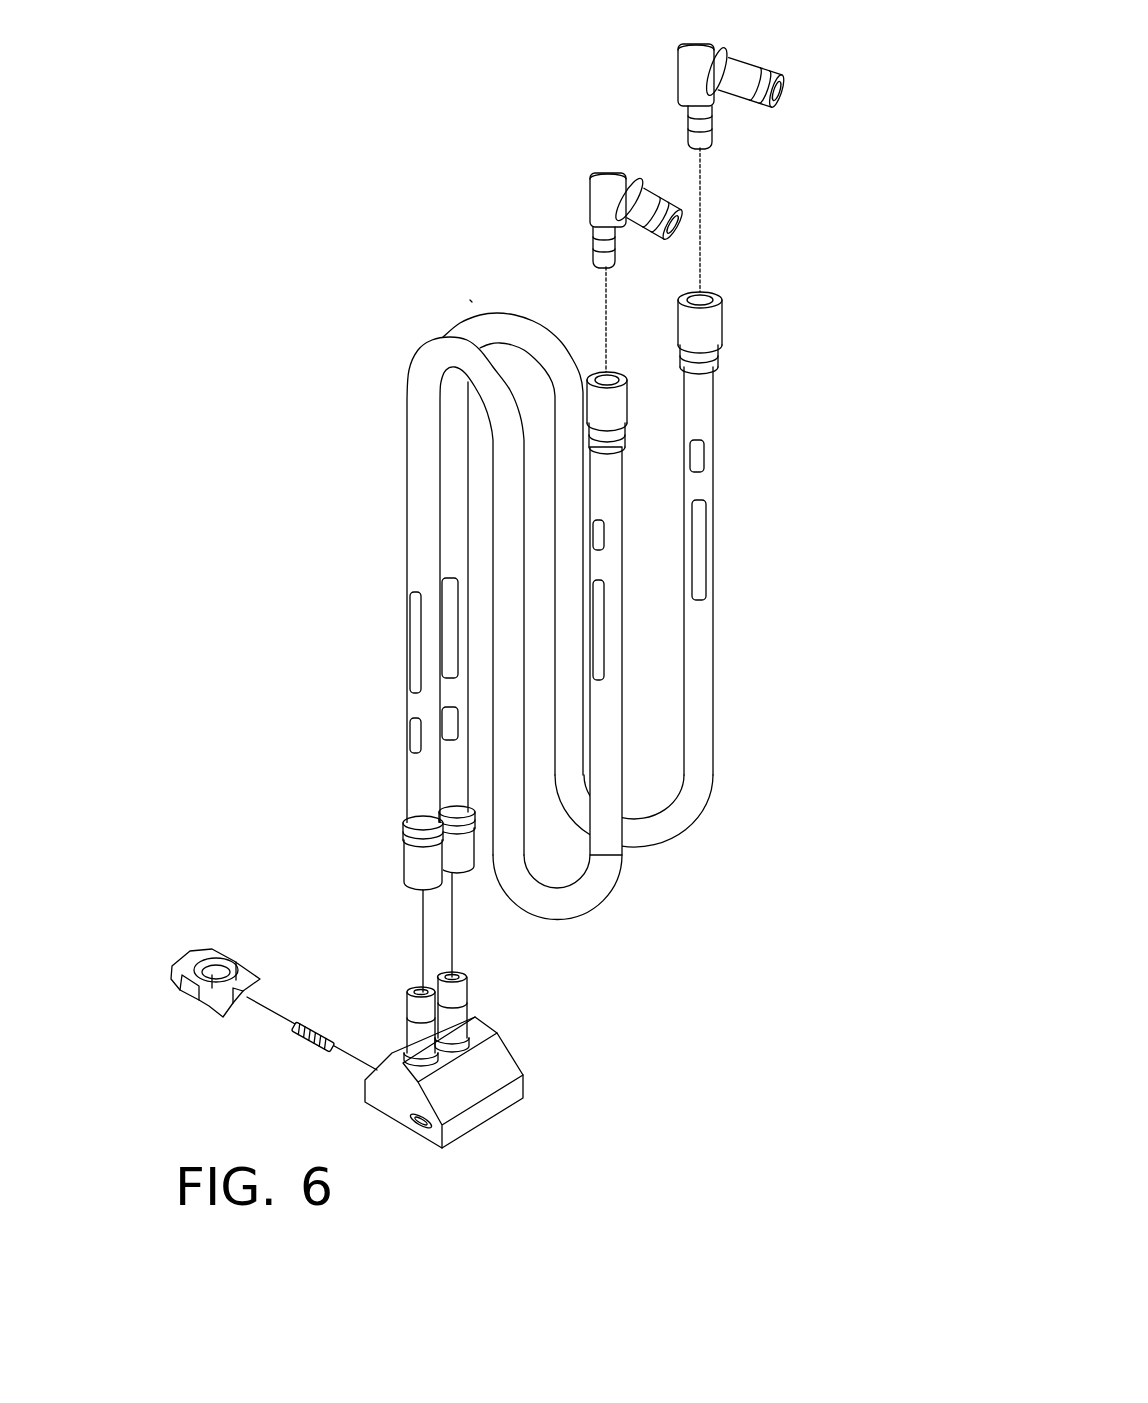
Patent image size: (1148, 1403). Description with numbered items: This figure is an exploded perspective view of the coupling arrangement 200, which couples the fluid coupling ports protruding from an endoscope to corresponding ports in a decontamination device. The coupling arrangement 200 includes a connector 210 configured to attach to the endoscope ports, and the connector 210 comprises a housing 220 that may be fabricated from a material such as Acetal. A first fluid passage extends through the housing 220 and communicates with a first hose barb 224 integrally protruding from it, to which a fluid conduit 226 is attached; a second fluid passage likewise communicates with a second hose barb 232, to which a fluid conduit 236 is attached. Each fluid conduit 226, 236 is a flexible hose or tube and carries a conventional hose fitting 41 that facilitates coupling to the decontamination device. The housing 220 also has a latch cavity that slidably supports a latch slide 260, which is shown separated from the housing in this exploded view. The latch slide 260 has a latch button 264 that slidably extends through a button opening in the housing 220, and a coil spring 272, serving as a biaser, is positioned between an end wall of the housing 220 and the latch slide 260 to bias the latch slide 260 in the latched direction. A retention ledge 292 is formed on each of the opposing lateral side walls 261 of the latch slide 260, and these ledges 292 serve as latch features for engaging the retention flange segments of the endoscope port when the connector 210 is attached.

The hose fitting 41 is at (608, 158).
The coupling arrangement 200 is at (313, 785).
The connector 210 is at (574, 1032).
The housing 220 is at (496, 1110).
The first hose barb 224 is at (406, 1036).
The fluid conduit 226 is at (420, 463).
The second hose barb 232 is at (466, 1010).
The fluid conduit 236 is at (706, 689).
The latch slide 260 is at (249, 929).
The lateral side walls 261 is at (222, 958).
The latch button 264 is at (190, 958).
The coil spring 272 is at (307, 1051).
The retention ledge 292 is at (237, 964).